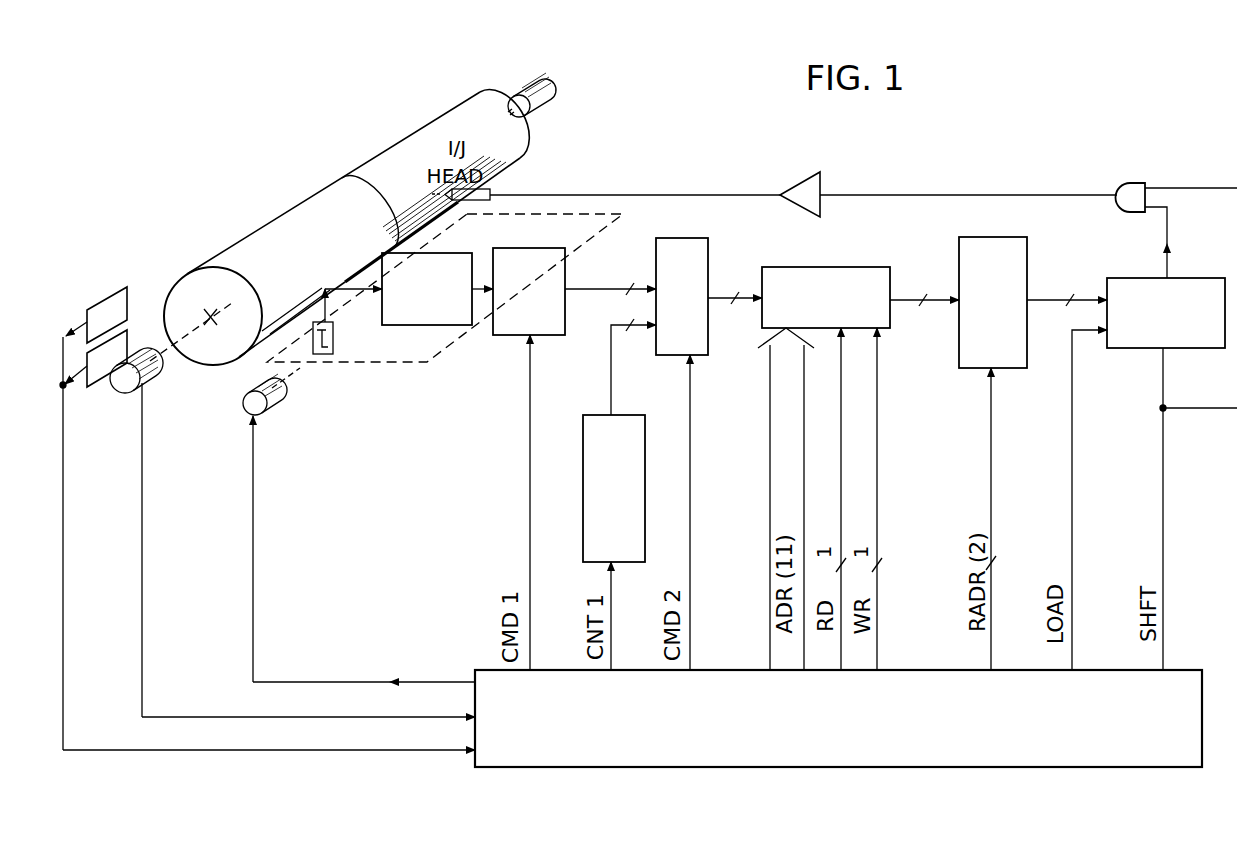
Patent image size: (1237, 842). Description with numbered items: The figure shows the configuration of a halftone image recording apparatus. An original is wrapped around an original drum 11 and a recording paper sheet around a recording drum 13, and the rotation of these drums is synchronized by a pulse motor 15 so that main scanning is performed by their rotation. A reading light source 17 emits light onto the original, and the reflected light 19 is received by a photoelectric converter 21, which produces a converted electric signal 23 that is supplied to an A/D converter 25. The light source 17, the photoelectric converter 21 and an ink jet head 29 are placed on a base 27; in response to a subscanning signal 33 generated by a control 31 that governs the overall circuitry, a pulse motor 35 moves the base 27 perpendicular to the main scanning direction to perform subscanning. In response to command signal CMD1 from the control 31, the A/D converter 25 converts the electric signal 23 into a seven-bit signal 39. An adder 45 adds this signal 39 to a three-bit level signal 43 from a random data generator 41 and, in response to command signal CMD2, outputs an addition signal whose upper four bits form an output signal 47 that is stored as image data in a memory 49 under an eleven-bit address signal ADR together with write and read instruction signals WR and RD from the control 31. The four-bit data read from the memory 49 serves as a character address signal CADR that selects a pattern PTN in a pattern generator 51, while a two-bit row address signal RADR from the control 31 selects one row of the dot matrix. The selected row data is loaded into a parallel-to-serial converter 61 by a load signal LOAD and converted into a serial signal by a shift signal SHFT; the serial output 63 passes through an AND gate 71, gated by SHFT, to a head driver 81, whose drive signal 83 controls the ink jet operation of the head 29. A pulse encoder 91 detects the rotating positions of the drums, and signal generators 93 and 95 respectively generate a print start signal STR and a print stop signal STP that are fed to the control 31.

The original drum 11 is at (278, 217).
The recording drum 13 is at (405, 138).
The pulse motor 15 is at (530, 82).
The reading light source 17 is at (333, 338).
The reflected light 19 is at (327, 289).
The photoelectric converter 21 is at (455, 253).
The electric signal 23 is at (488, 298).
The analog-to-digital converter 25 is at (545, 336).
The base 27 is at (402, 352).
The ink jet head 29 is at (440, 208).
The control 31 is at (1186, 670).
The subscanning signal 33 is at (352, 682).
The pulse motor 35 is at (243, 405).
The 7-bit signal 39 is at (585, 290).
The random data generator 41 is at (636, 562).
The 3-bit level signal 43 is at (611, 380).
The adder 45 is at (708, 250).
The output signal 47 is at (735, 306).
The memory 49 is at (853, 267).
The pattern generator 51 is at (1027, 250).
The parallel-to-serial converter 61 is at (1135, 348).
The serial data line 63 is at (1167, 258).
The AND gate 71 is at (1130, 183).
The head driver 81 is at (800, 184).
The drive signal 83 is at (705, 195).
The pulse encoder 91 is at (122, 394).
The signal generator 93 is at (107, 297).
The signal generator 95 is at (130, 332).